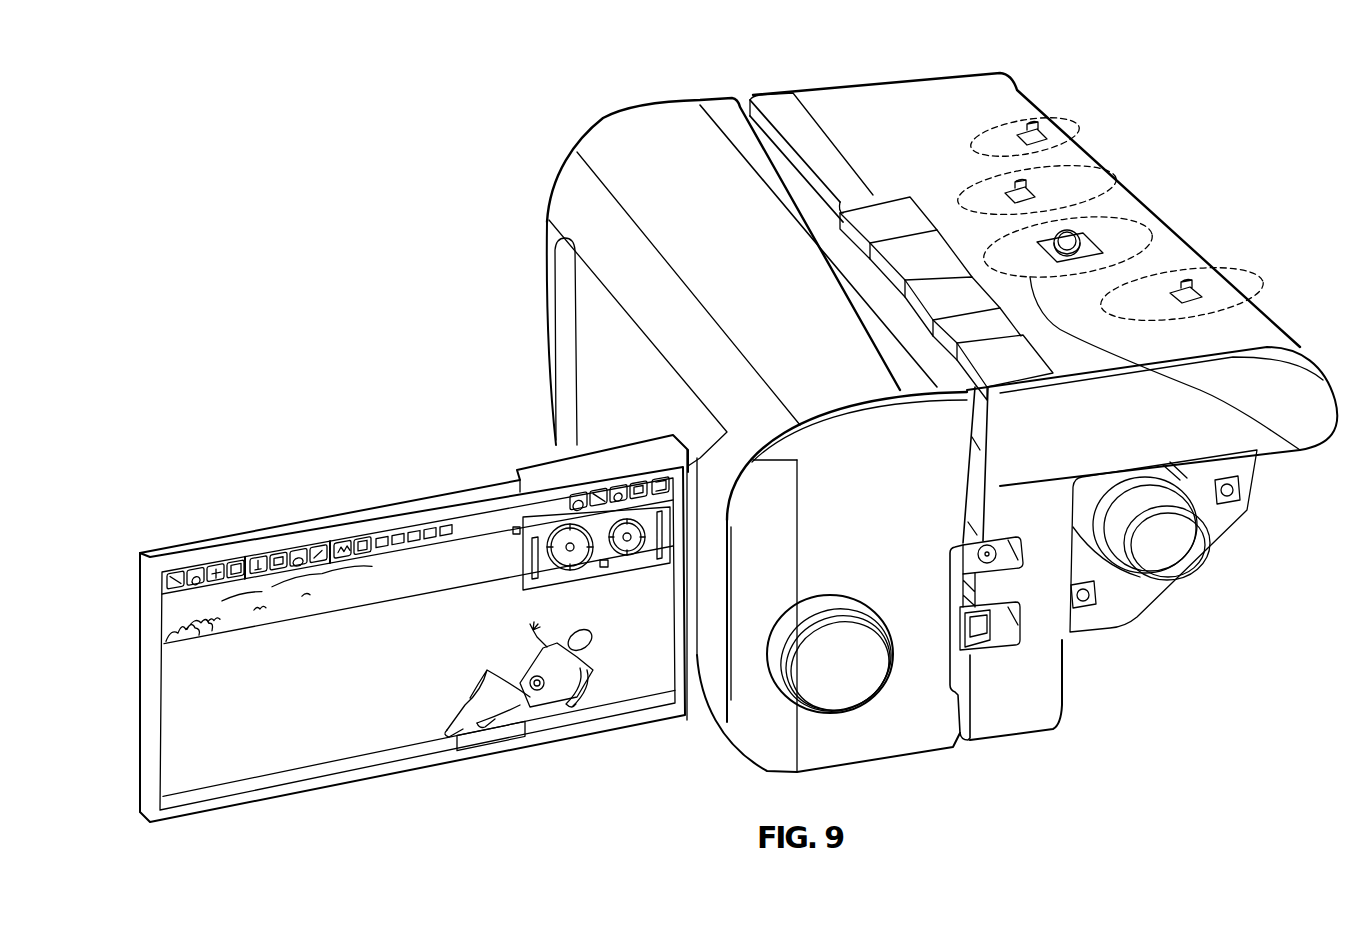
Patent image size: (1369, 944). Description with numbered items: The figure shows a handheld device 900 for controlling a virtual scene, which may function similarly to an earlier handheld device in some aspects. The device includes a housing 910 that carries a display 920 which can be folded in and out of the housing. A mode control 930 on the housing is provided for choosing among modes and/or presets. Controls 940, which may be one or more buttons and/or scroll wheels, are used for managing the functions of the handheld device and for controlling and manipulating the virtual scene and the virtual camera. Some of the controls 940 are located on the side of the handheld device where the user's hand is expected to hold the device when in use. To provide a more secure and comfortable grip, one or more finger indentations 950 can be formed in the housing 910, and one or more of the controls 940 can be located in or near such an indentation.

The handheld device 900 is at (424, 140).
The housing 910 is at (909, 703).
The display 920 is at (434, 501).
The mode control 930 is at (777, 670).
The controls 940 is at (1071, 237).
The finger indentations 950 is at (1290, 445).